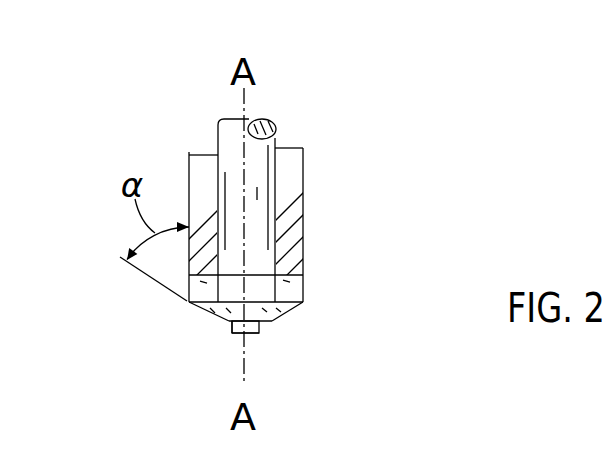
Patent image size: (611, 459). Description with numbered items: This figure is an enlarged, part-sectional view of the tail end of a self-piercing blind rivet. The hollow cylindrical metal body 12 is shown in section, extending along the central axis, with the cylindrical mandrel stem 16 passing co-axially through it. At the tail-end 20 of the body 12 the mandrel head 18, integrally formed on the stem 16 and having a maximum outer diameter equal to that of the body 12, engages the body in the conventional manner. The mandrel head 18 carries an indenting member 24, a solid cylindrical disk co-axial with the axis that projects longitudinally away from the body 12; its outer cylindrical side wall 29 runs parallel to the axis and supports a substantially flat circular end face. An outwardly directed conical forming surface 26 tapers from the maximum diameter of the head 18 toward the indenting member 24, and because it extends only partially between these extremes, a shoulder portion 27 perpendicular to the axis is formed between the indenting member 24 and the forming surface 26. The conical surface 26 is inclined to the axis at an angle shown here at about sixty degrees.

The cylindrical metal body 12 is at (303, 198).
The mandrel stem 16 is at (262, 146).
The mandrel head 18 is at (192, 304).
The tail-end 20 is at (294, 283).
The indenting member 24 is at (260, 331).
The conical forming surface 26 is at (288, 312).
The shoulder portion 27 is at (232, 333).
The outer cylindrical side wall 29 is at (260, 328).